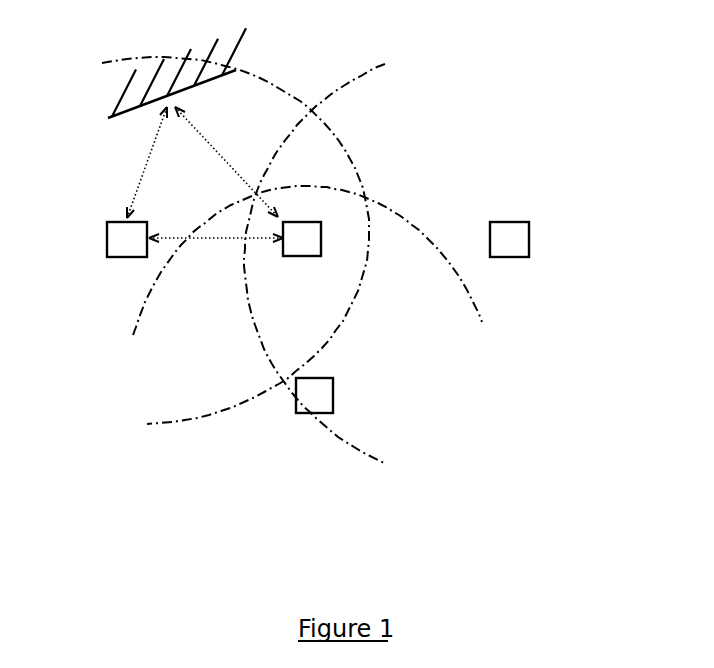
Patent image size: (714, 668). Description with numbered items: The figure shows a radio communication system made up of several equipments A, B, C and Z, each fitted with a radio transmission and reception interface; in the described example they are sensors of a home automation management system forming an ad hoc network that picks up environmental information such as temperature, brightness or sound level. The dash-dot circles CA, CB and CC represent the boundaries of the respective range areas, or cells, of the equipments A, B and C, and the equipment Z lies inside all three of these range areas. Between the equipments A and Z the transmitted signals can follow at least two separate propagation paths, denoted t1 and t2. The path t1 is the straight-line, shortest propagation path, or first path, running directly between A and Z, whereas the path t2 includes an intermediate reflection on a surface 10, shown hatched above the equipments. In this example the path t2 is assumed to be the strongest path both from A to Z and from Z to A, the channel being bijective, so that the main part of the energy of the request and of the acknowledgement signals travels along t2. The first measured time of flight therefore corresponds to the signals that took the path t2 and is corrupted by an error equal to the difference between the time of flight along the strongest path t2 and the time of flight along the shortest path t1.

The surface 10 is at (147, 104).
The equipment A is at (105, 238).
The equipment Z is at (295, 222).
The equipment B is at (308, 412).
The equipment C is at (529, 235).
The circle CA is at (210, 412).
The circle CB is at (465, 292).
The circle CC is at (358, 448).
The propagation path t1 is at (216, 233).
The propagation path t2 is at (202, 162).